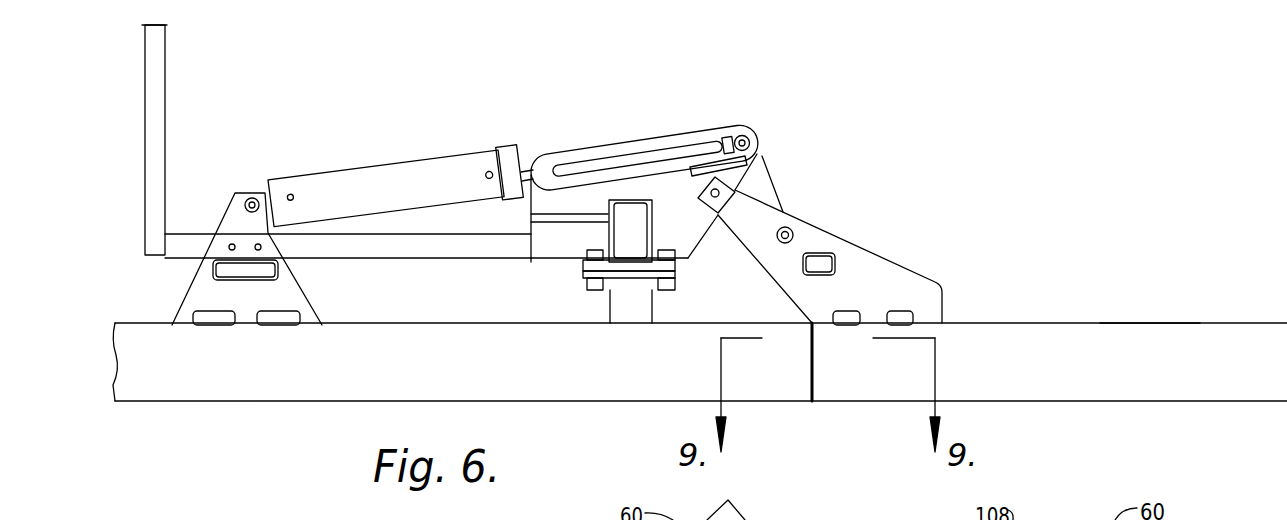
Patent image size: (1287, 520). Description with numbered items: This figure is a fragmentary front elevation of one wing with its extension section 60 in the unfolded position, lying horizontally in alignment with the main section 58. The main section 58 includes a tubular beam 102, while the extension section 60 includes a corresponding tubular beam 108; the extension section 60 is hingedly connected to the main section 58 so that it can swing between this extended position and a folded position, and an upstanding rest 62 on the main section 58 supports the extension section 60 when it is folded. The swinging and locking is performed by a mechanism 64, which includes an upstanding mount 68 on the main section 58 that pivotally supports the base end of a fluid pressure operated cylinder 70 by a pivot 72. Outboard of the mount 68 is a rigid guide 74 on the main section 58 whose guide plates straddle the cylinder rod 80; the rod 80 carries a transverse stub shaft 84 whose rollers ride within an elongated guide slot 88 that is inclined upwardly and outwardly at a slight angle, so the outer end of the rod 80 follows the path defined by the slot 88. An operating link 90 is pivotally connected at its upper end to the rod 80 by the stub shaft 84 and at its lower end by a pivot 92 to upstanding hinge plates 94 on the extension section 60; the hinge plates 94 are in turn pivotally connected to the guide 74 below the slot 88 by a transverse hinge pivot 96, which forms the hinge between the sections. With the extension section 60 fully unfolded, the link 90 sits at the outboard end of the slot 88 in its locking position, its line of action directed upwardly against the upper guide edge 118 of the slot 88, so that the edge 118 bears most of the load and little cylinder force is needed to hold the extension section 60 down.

The main section 58 is at (275, 402).
The extension section 60 is at (1143, 323).
The upstanding rest 62 is at (165, 68).
The mechanism 64 is at (528, 100).
The upstanding mount 68 is at (290, 290).
The fluid pressure operated cylinder 70 is at (410, 172).
The pivot 72 is at (248, 199).
The rigid guide 74 is at (683, 127).
The cylinder rod 80 is at (683, 152).
The transverse stub shaft 84 is at (750, 140).
The guide slot 88 is at (563, 182).
The operating link 90 is at (765, 185).
The pivot 92 is at (795, 232).
The hinge plate 94 is at (888, 272).
The transverse hinge pivot 96 is at (718, 216).
The tubular beam 102 is at (537, 385).
The tubular beam 108 is at (1100, 383).
The upper guide edge 118 is at (658, 155).